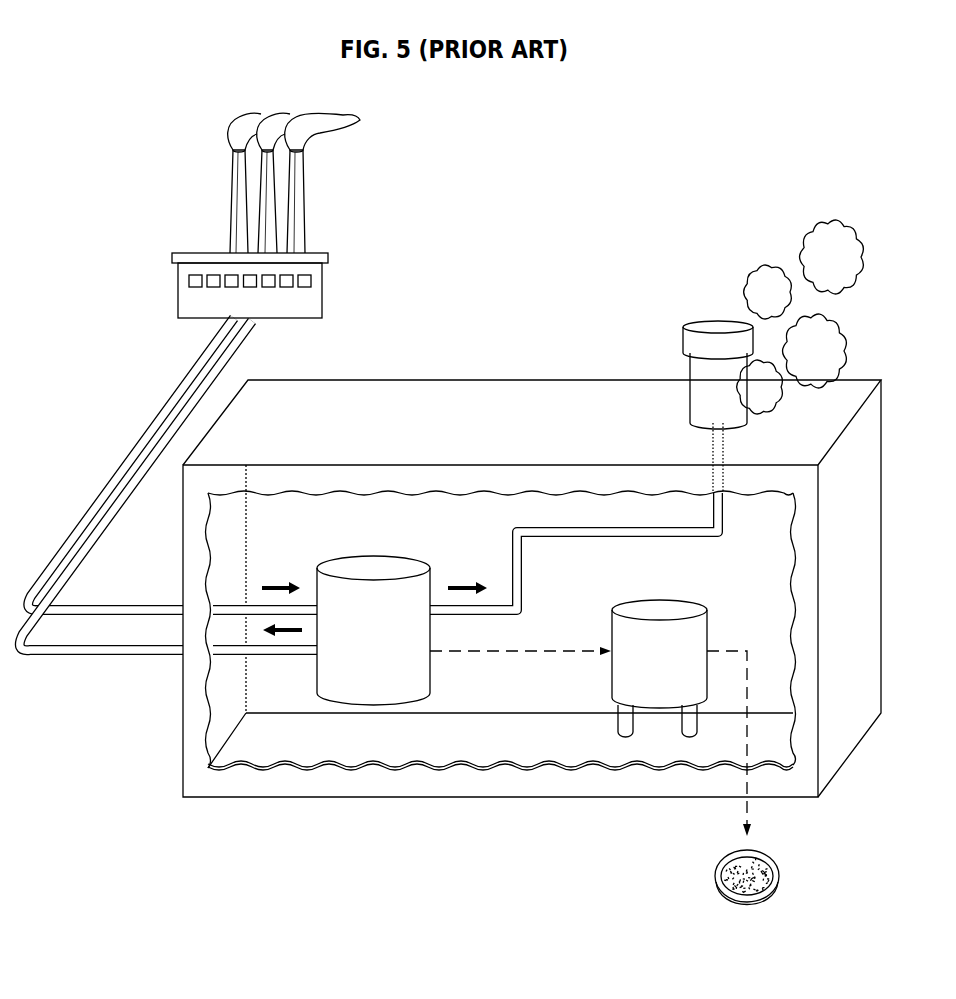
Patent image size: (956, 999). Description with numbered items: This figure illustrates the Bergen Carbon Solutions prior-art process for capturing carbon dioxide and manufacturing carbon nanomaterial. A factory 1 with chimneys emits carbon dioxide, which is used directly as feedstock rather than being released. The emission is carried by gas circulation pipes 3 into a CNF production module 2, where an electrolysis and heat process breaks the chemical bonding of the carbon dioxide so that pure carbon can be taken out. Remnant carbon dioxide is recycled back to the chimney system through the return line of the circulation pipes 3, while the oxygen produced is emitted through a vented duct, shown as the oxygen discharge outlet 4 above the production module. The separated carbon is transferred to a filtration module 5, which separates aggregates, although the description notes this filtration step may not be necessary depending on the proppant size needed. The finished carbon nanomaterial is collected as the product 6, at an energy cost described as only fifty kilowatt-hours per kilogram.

The factory / exhaust gas source 1 is at (251, 215).
The CNF production module 2 is at (373, 610).
The gas circulation pipes 3 is at (157, 484).
The oxygen discharge outlet 4 is at (773, 356).
The filtration module 5 is at (659, 649).
The collected carbon nanofibers 6 is at (730, 877).